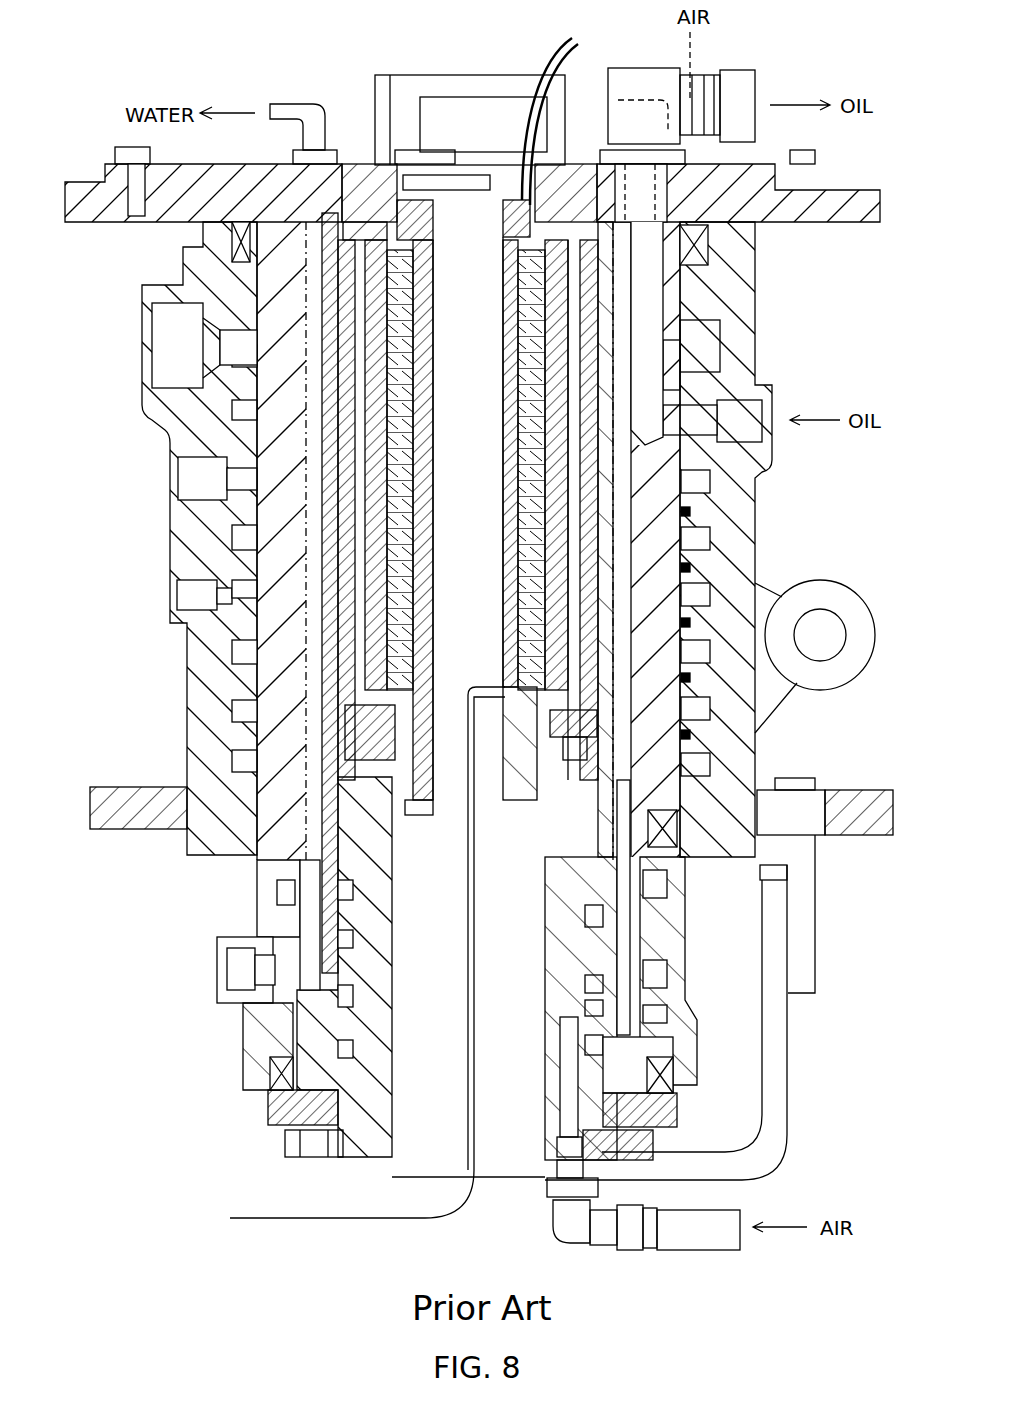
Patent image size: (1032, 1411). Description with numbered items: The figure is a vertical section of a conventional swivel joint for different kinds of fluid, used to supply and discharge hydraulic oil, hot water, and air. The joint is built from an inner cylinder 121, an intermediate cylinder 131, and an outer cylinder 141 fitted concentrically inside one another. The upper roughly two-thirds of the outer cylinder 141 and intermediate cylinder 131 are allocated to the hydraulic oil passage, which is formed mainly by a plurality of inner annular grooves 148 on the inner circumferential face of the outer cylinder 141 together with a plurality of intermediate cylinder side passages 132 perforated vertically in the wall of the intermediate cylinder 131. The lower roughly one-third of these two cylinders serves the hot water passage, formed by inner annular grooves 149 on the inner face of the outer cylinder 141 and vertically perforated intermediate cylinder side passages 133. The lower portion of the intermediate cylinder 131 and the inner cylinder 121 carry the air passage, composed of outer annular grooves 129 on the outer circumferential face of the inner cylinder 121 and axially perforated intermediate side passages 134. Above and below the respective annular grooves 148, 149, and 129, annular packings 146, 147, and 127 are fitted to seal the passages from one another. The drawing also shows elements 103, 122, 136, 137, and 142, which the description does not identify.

The air supply pipe 103 is at (672, 960).
The inner cylinder 121 is at (367, 1125).
The pipe 122 is at (568, 1100).
The annular packing 127 is at (348, 1045).
The outer annular groove 129 is at (350, 890).
The intermediate cylinder 131 is at (300, 1130).
The intermediate cylinder side passage 132 is at (645, 280).
The intermediate cylinder side passage 133 is at (312, 646).
The intermediate side passage 134 is at (620, 705).
The hole 136 is at (320, 965).
The seal ring 137 is at (590, 1010).
The outer cylinder 141 is at (270, 1040).
The outer housing 142 is at (200, 480).
The annular packing 146 is at (240, 272).
The annular packing 147 is at (667, 885).
The inner annular groove 148 is at (240, 350).
The inner annular groove 149 is at (285, 905).